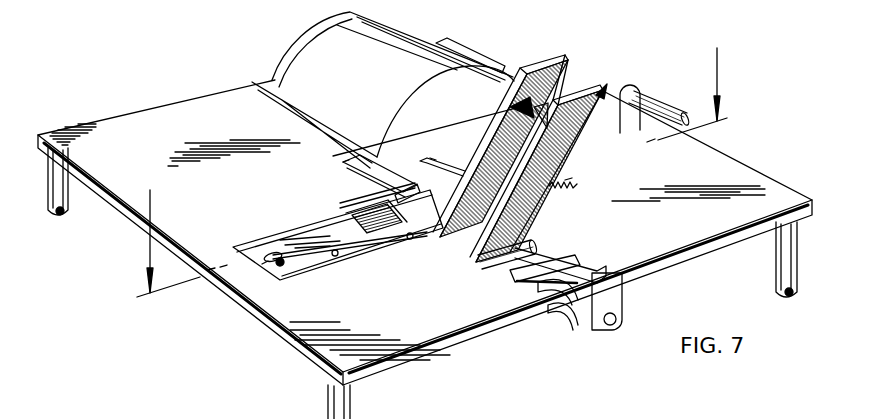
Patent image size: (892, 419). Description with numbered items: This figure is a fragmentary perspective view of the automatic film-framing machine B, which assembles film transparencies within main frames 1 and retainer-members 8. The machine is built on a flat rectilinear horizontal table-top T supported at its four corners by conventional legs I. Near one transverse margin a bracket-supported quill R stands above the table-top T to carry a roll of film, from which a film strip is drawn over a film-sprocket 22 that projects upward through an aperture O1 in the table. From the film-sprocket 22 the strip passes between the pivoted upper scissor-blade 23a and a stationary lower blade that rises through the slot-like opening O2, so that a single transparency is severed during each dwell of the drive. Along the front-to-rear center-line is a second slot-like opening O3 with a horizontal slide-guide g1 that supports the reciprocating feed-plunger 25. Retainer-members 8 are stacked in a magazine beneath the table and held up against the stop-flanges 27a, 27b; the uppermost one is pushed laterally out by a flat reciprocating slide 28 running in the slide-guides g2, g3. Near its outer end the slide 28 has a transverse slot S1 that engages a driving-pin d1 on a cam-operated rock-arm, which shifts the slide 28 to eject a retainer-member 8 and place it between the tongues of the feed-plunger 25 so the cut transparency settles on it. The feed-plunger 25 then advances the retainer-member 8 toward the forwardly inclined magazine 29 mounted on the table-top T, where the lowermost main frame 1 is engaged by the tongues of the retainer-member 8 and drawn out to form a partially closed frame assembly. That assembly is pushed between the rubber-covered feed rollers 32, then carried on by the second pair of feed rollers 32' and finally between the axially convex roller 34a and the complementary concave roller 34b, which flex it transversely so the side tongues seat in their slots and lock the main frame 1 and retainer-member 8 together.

The automatic machine B is at (97, 117).
The table-top T is at (725, 173).
The main frame 1 is at (66, 205).
The retainer-member 8 is at (432, 163).
The feed-plunger 25 is at (360, 160).
The magazine 29 is at (560, 55).
The leg I is at (556, 82).
The upper scissor-blade 23a is at (440, 160).
The aperture O1 is at (565, 180).
The slot-like opening O2 is at (430, 158).
The second slot-like opening O3 is at (343, 162).
The film-sprocket 22 is at (565, 185).
The slide-guide g1 is at (350, 173).
The slide-guide g2 is at (280, 235).
The slide-guide g3 is at (336, 256).
The slide 28 is at (293, 262).
The stop-flange 27a is at (372, 210).
The stop-flange 27b is at (444, 273).
The transverse slot S1 is at (275, 268).
The driving-pin d1 is at (265, 265).
The feed rollers 32 is at (524, 244).
The second feed rollers 32' is at (564, 258).
The convex feed roller 34a is at (540, 298).
The concave feed roller 34b is at (572, 320).
The quill R is at (640, 95).